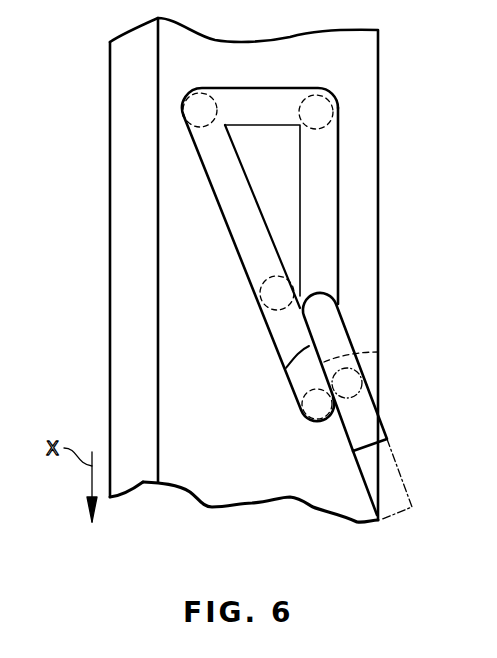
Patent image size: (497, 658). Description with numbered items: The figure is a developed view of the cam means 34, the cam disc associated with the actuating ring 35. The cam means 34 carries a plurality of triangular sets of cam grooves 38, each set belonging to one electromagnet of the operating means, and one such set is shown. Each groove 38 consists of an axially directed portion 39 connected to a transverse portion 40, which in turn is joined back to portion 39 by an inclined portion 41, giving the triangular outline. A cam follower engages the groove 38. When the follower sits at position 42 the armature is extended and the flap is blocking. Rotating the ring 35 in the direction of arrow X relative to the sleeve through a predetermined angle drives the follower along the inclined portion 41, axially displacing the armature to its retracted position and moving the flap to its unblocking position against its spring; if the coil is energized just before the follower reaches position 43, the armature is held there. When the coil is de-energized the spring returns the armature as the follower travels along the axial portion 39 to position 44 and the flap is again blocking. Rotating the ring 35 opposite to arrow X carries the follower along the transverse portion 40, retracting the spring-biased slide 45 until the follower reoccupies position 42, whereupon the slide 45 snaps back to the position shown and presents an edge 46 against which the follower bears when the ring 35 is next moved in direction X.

The cam means 34 is at (327, 517).
The ring 35 is at (141, 486).
The cam groove 38 is at (312, 255).
The axially directed portion 39 is at (265, 97).
The transverse portion 40 is at (328, 188).
The inclined portion 41 is at (244, 237).
The position 42 is at (323, 370).
The position 43 is at (218, 100).
The position 44 is at (322, 128).
The slide 45 is at (372, 422).
The edge 46 is at (286, 368).